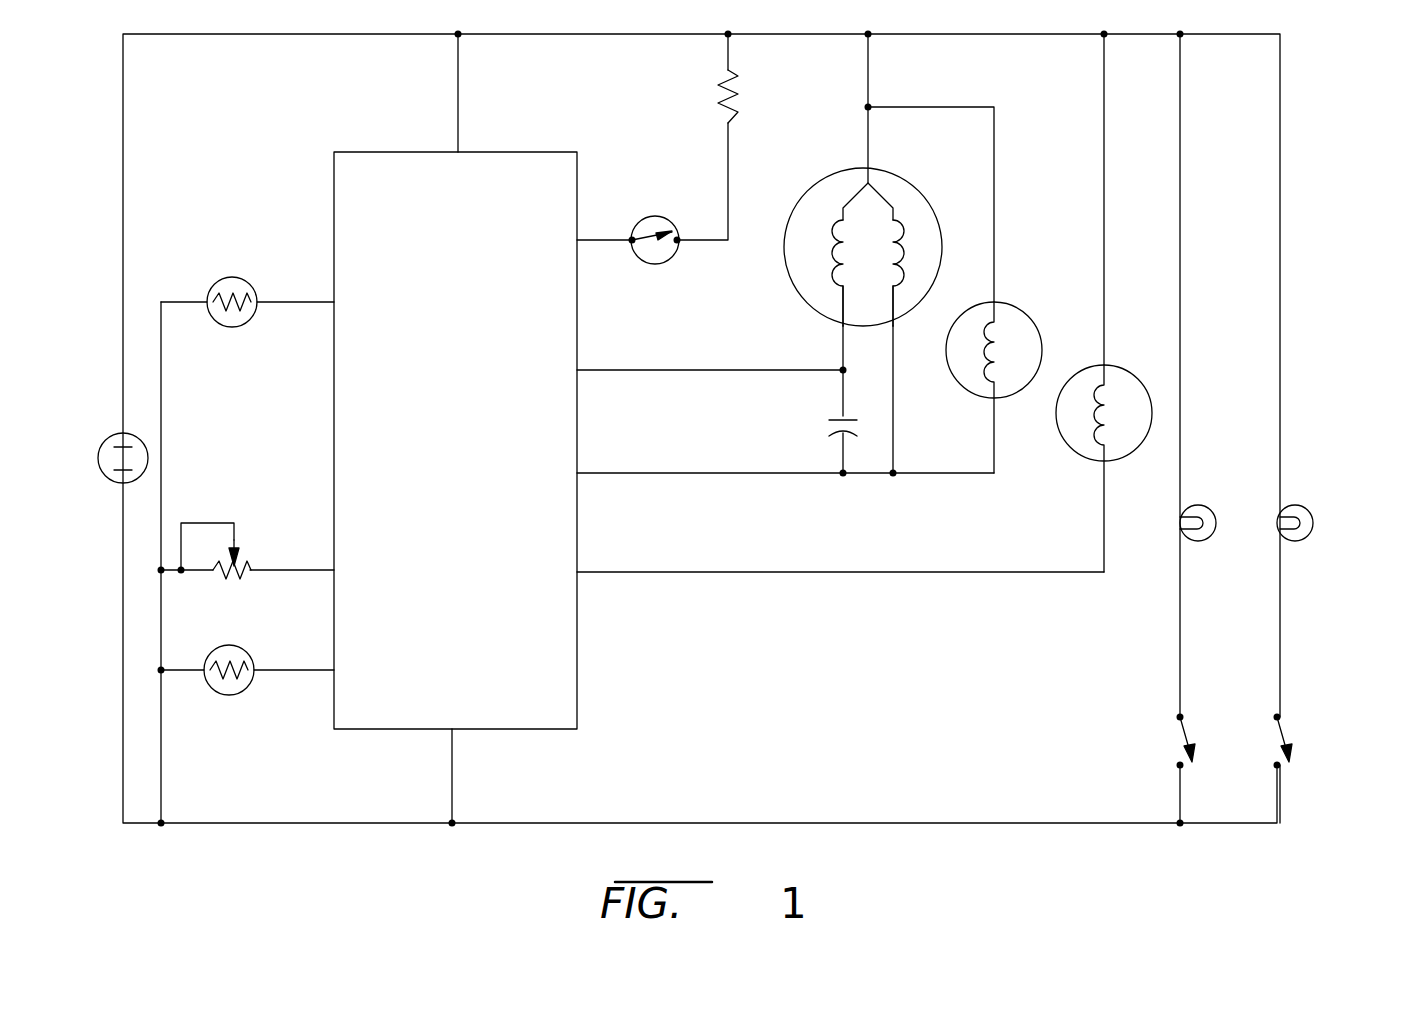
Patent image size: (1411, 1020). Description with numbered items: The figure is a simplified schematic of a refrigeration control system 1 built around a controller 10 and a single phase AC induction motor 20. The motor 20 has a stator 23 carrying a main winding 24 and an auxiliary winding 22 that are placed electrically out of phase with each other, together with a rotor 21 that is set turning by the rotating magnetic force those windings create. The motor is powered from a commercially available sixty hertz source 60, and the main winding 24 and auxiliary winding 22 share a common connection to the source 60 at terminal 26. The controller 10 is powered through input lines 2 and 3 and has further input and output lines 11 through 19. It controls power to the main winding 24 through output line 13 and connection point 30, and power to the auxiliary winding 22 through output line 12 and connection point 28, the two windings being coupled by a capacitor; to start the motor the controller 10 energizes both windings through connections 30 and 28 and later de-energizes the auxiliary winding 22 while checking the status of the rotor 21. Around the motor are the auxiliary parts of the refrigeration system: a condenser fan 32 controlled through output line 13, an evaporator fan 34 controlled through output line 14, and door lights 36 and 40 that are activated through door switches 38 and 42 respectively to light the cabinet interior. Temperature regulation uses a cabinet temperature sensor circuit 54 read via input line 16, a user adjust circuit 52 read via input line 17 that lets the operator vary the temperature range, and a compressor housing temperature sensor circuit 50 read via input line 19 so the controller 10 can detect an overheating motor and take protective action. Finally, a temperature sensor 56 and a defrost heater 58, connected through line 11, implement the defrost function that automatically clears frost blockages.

The control system 1 is at (318, 142).
The input line 2 is at (468, 93).
The input line 3 is at (461, 776).
The controller 10 is at (417, 487).
The output line 11 is at (604, 227).
The output line 12 is at (710, 357).
The output line 13 is at (710, 460).
The output line 14 is at (840, 559).
The input line 16 is at (294, 683).
The input line 17 is at (292, 583).
The input line 19 is at (295, 289).
The single phase AC induction motor 20 is at (824, 197).
The rotor 21 is at (803, 280).
The auxiliary winding 22 is at (831, 233).
The stator 23 is at (930, 287).
The main winding 24 is at (905, 242).
The terminal 26 is at (930, 192).
The connection point 28 is at (812, 399).
The connection point 30 is at (917, 401).
The condenser fan 32 is at (1038, 348).
The evaporator fan 34 is at (1128, 380).
The door light 36 is at (1210, 508).
The door switch 38 is at (1186, 740).
The door light 40 is at (1310, 534).
The door switch 42 is at (1290, 730).
The compressor housing temperature sensor circuit 50 is at (220, 327).
The user adjust circuit 52 is at (240, 558).
The cabinet temperature sensor circuit 54 is at (211, 655).
The temperature sensor 56 is at (652, 264).
The defrost heater 58 is at (740, 92).
The 60 hertz source 60 is at (112, 440).